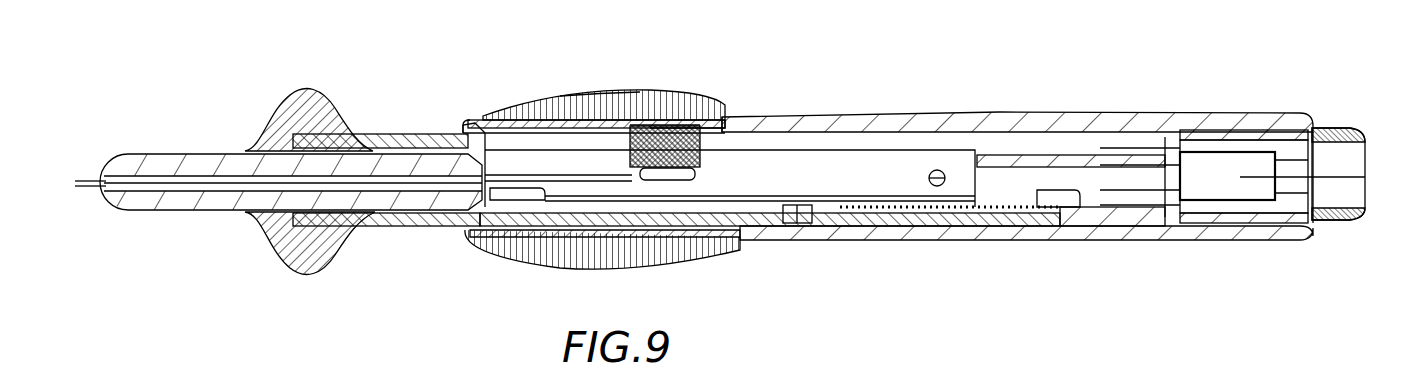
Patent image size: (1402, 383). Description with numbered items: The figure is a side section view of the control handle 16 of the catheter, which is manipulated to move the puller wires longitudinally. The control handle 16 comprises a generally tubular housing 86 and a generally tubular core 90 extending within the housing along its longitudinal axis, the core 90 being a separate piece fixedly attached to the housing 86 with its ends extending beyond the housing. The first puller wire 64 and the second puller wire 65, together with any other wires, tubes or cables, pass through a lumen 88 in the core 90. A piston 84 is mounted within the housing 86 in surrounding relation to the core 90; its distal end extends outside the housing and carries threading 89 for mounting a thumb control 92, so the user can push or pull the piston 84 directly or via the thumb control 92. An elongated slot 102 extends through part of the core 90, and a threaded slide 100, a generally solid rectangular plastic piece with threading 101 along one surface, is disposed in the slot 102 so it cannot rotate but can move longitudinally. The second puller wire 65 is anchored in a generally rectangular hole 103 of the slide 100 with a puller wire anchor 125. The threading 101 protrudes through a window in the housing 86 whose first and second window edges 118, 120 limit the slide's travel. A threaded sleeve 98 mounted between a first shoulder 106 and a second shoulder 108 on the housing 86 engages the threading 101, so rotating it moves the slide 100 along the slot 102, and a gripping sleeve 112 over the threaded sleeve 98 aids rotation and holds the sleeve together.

The control handle 16 is at (1100, 68).
The first puller wire 64 is at (99, 187).
The second puller wire 65 is at (90, 184).
The piston 84 is at (417, 230).
The housing 86 is at (963, 117).
The lumen 88 is at (135, 153).
The threading 89 is at (350, 235).
The core 90 is at (178, 212).
The thumb control 92 is at (312, 91).
The threaded sleeve 98 is at (662, 103).
The threaded slide 100 is at (705, 150).
The threading 101 is at (690, 125).
The slot 102 is at (885, 167).
The hole 103 is at (712, 202).
The first shoulder 106 is at (703, 130).
The second shoulder 108 is at (468, 118).
The gripping sleeve 112 is at (613, 108).
The first window edge 118 is at (706, 118).
The second window edge 120 is at (550, 108).
The puller wire anchor 125 is at (663, 183).